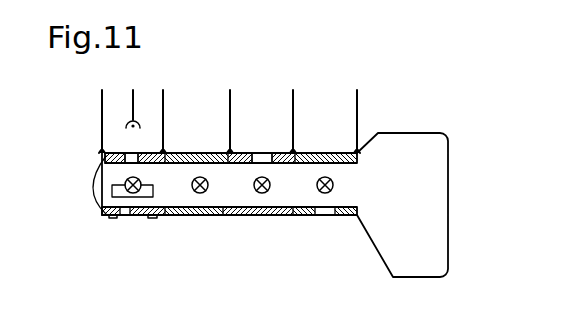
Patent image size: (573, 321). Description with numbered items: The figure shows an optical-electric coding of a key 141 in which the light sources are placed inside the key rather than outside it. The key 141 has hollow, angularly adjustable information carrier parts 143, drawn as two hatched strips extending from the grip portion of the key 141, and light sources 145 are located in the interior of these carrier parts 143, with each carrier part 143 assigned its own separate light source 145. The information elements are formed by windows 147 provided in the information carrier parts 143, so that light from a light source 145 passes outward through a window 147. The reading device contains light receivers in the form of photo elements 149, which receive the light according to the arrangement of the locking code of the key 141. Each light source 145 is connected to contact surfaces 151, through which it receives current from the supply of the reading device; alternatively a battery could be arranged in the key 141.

The key 141 is at (458, 128).
The information carrier parts 143 is at (136, 218).
The light sources 145 is at (127, 181).
The windows 147 is at (135, 154).
The photo elements 149 is at (135, 112).
The contact surfaces 151 is at (110, 220).